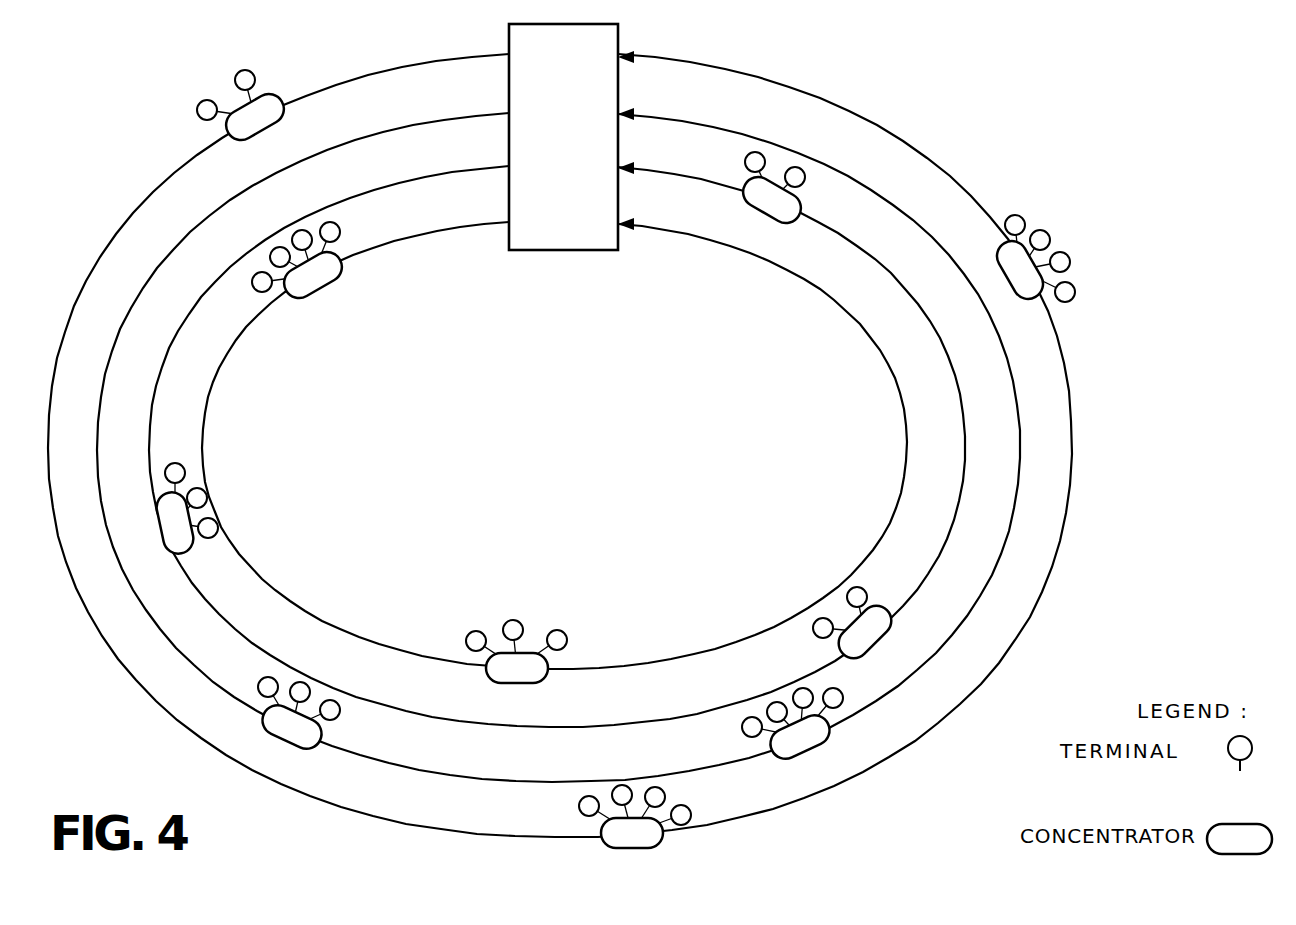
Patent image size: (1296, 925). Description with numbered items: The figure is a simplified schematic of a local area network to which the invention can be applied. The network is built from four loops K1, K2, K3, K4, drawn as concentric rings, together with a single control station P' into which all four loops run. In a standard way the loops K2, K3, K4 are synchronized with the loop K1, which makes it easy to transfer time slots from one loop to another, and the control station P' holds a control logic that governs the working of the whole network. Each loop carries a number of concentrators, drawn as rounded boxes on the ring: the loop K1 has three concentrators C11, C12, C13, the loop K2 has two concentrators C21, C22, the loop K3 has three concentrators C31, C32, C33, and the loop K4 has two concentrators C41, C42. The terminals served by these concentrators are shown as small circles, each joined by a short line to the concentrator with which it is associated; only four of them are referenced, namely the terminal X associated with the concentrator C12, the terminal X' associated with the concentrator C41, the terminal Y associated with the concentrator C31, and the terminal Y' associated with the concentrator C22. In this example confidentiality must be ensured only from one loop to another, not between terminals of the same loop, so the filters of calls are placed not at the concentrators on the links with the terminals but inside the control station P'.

The loop K1 is at (128, 226).
The loop K2 is at (125, 348).
The loop K3 is at (175, 350).
The loop K4 is at (259, 558).
The control station P' is at (568, 160).
The concentrator C11 is at (283, 107).
The concentrator C12 is at (661, 846).
The concentrator C13 is at (1032, 300).
The concentrator C21 is at (306, 746).
The concentrator C22 is at (829, 728).
The concentrator C31 is at (168, 548).
The concentrator C32 is at (882, 610).
The concentrator C33 is at (797, 222).
The concentrator C41 is at (340, 282).
The concentrator C42 is at (548, 682).
The terminal X is at (560, 811).
The terminal X' is at (360, 221).
The terminal Y is at (218, 551).
The terminal Y' is at (852, 686).